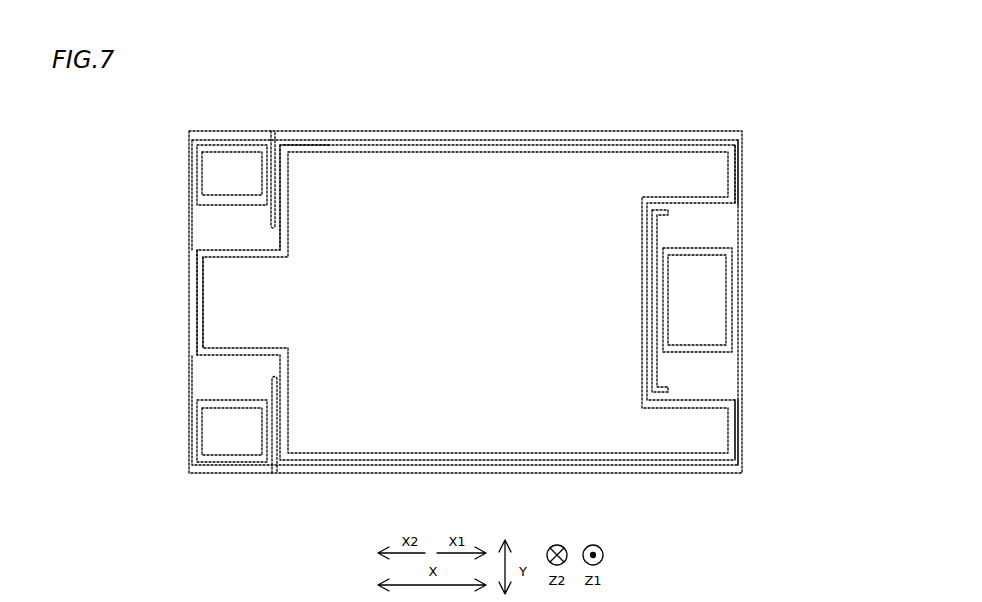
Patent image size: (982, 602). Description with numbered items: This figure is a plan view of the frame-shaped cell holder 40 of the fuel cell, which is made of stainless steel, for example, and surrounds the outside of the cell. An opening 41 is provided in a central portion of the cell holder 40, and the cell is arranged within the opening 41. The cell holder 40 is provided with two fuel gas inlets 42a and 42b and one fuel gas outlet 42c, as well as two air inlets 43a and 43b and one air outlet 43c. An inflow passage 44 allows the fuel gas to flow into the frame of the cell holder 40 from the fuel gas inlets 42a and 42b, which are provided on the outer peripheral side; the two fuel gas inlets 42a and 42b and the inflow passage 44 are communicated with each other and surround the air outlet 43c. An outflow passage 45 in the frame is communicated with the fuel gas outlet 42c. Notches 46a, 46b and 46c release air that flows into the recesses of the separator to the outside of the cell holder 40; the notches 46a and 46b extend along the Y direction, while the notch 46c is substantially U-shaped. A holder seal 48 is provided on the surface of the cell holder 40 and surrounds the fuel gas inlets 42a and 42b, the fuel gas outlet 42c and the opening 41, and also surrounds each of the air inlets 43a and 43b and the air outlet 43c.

The cell holder 40 is at (724, 100).
The opening 41 is at (461, 158).
The inflow passage 44 is at (649, 160).
The outflow passage 45 is at (280, 300).
The holder seal 48 is at (303, 143).
The fuel gas inlet 42a is at (733, 176).
The fuel gas inlet 42b is at (733, 447).
The fuel gas outlet 42c is at (203, 306).
The air inlet 43a is at (203, 181).
The air inlet 43b is at (203, 442).
The air outlet 43c is at (720, 311).
The notch 46a is at (273, 150).
The notch 46b is at (274, 455).
The notch 46c is at (658, 232).